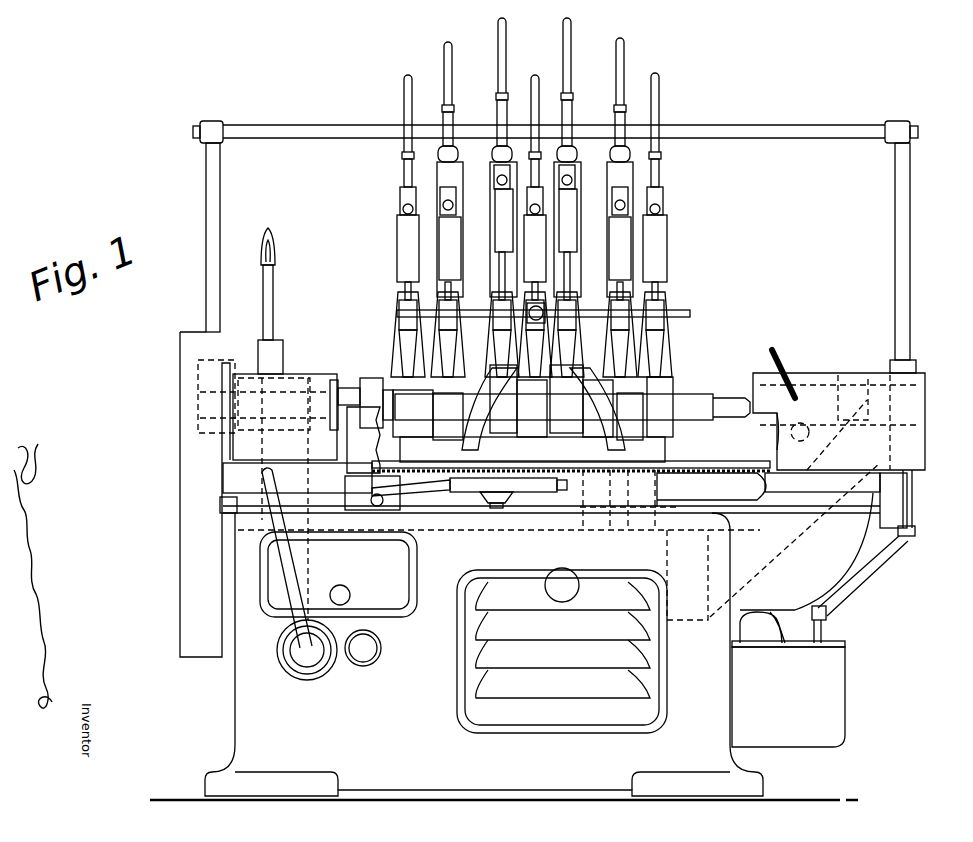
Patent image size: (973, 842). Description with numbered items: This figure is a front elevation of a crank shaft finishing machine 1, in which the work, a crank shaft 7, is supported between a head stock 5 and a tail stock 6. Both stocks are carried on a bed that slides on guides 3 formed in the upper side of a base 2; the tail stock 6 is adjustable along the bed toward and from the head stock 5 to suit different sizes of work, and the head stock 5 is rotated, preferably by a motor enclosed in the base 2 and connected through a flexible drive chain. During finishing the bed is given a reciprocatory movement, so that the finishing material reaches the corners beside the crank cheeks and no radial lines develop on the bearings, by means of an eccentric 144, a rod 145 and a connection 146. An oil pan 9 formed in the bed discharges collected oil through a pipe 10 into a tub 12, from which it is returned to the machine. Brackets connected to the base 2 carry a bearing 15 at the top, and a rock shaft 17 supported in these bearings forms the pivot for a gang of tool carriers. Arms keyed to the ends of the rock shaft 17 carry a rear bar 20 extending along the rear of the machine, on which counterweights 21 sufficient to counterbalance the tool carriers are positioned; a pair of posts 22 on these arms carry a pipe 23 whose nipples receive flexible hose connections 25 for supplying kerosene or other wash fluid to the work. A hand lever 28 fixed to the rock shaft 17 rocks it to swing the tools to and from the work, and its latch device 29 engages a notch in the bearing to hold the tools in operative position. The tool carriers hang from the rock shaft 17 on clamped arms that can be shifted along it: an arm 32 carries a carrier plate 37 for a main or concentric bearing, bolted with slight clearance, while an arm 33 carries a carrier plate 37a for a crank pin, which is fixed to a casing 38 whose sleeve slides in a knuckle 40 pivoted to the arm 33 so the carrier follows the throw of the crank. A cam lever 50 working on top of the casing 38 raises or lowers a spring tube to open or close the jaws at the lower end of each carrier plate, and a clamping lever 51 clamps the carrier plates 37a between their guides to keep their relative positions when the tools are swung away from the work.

The work table 1 is at (705, 463).
The base 2 is at (511, 634).
The guides 3 is at (250, 479).
The head stock 5 is at (328, 377).
The tail stock 6 is at (825, 373).
The crank shaft 7 is at (600, 428).
The oil pan 9 is at (711, 490).
The pipe 10 is at (876, 558).
The tub 12 is at (788, 694).
The bearing 15 is at (913, 503).
The rock shaft 17 is at (700, 390).
The rear bar 20 is at (566, 530).
The counterweights 21 is at (637, 492).
The posts 22 is at (221, 198).
The pipe 23 is at (742, 125).
The flexible pipe or hose connections 25 is at (535, 75).
The hand lever 28 is at (283, 350).
The latch device 29 is at (273, 286).
The arm 32 is at (672, 313).
The arm 33 is at (441, 290).
The carrier plate 37 is at (663, 285).
The carrier plate 37a is at (628, 342).
The casing 38 is at (660, 239).
The knuckle 40 is at (457, 158).
The cam lever 50 is at (405, 210).
The clamping lever 51 is at (546, 310).
The eccentric 144 is at (397, 498).
The rod 145 is at (448, 486).
The connection 146 is at (503, 502).